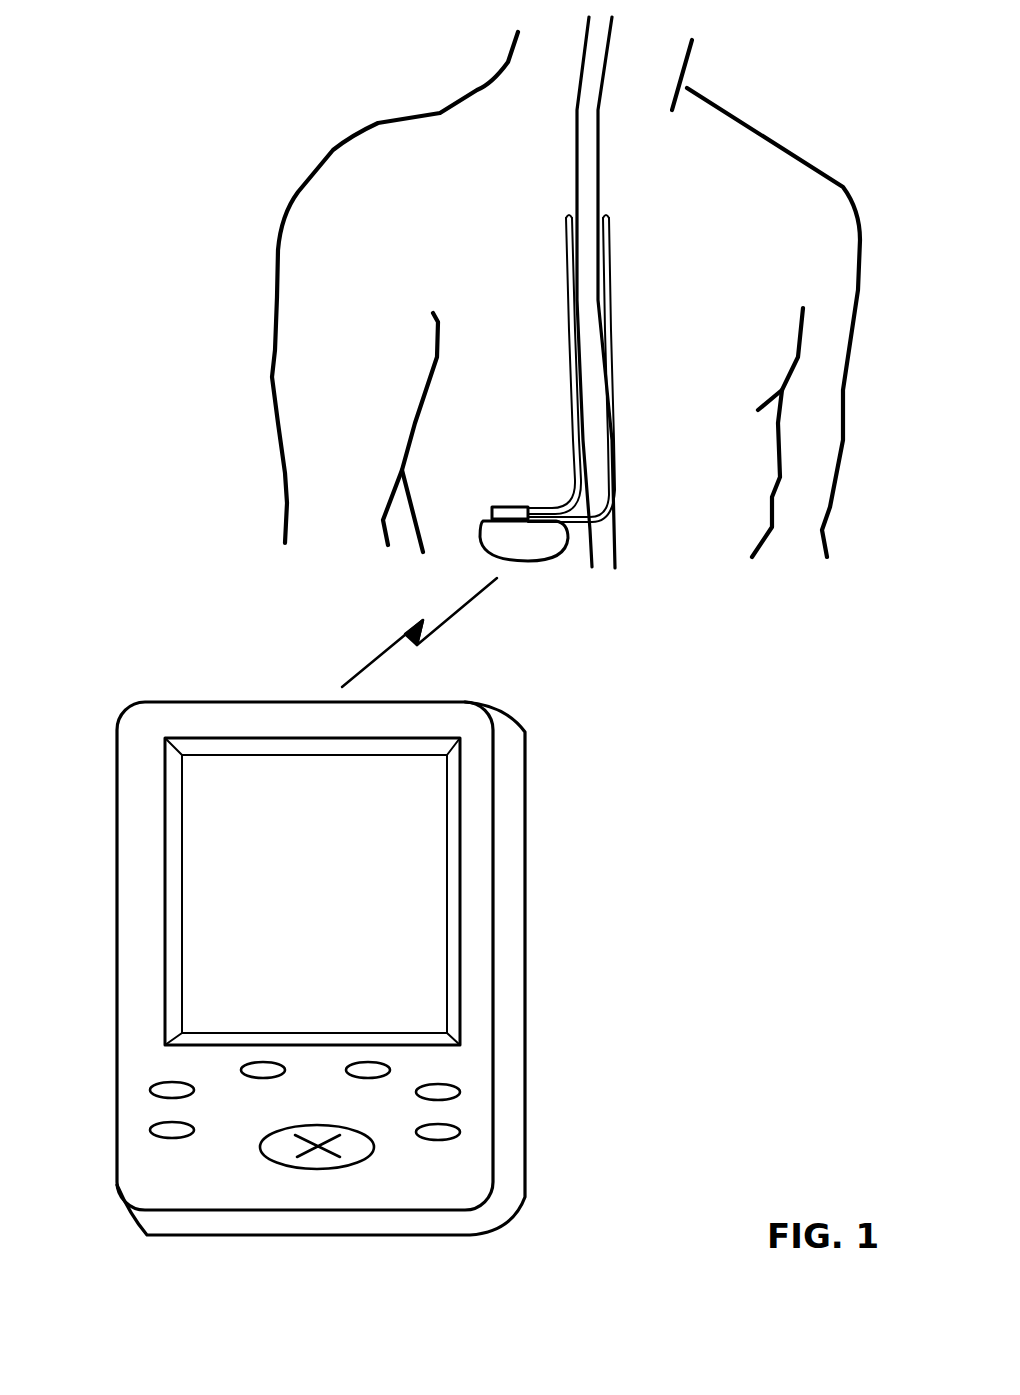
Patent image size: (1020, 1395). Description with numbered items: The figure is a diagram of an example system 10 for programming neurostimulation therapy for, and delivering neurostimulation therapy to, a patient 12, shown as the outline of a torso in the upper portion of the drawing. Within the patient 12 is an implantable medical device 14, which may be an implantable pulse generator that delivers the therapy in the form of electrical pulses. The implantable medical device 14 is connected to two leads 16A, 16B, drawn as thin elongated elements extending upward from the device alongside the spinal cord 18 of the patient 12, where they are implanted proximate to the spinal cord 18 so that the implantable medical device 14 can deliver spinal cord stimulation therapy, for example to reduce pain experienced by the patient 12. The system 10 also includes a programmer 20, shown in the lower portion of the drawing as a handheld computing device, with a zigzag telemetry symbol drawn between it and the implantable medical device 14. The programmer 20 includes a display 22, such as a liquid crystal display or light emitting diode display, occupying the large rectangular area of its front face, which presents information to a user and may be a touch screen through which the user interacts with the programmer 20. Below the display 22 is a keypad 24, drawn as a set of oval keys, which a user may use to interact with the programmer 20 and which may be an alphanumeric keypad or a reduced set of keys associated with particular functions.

The system 10 is at (140, 88).
The patient 12 is at (800, 106).
The implantable medical device 14 is at (481, 500).
The lead 16A is at (557, 332).
The lead 16B is at (645, 329).
The spinal cord 18 is at (632, 158).
The programmer 20 is at (201, 685).
The display 22 is at (407, 892).
The keypad 24 is at (418, 1156).